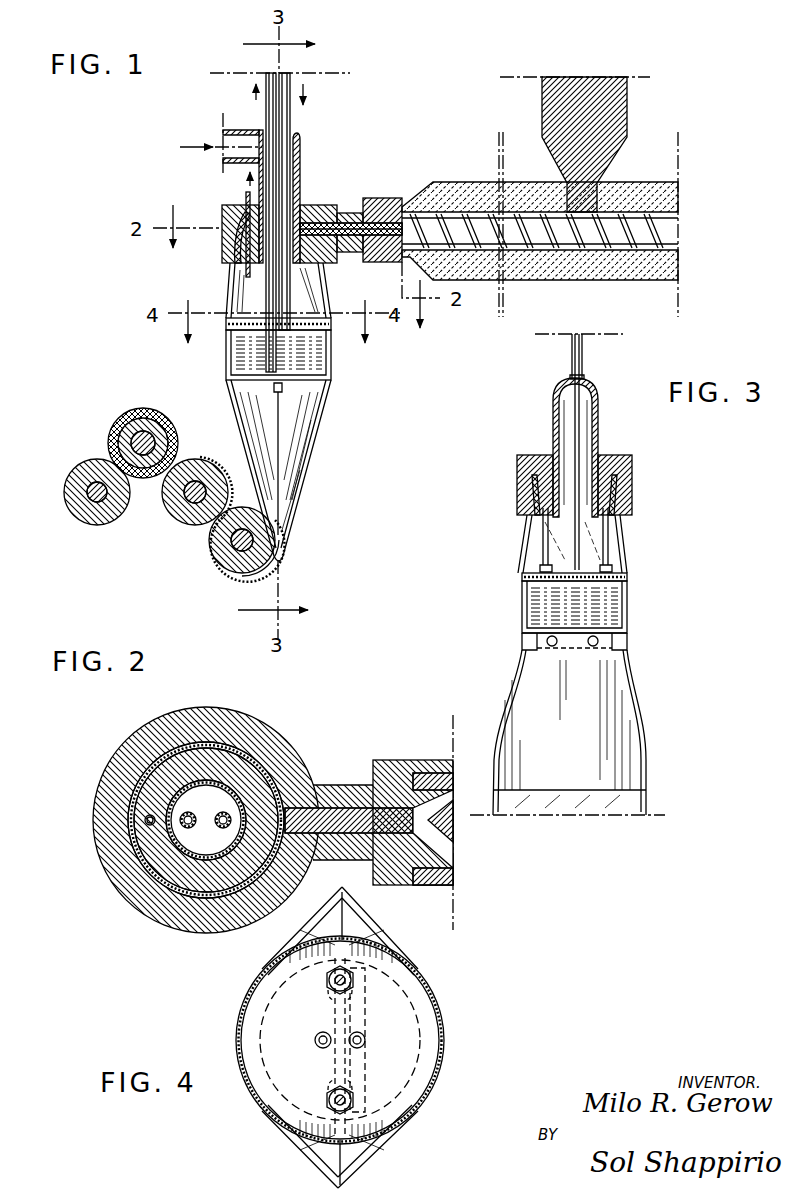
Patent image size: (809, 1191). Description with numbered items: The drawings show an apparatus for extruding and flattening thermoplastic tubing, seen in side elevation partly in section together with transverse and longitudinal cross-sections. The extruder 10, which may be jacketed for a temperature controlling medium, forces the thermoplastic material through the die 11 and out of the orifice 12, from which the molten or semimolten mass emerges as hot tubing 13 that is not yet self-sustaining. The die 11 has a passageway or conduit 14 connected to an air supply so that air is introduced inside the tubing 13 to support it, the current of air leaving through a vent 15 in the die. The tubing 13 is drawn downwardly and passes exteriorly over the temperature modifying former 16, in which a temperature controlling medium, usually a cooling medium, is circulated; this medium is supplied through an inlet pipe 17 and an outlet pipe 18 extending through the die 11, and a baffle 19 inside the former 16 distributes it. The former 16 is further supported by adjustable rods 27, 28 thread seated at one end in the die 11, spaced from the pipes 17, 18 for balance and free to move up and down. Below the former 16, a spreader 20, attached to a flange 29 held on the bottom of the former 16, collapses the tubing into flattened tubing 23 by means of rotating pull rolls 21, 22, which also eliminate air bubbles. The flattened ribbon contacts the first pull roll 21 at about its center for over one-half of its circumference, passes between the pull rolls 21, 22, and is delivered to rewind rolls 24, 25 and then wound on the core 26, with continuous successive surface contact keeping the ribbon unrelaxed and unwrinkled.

In FIG. 1, the extruder 10 is at (630, 186).
In FIG. 2, the extruder 10 is at (430, 778).
In FIG. 1, the die 11 is at (320, 212).
In FIG. 3, the die 11 is at (625, 472).
In FIG. 2, the die 11 is at (287, 752).
In FIG. 1, the orifice 12 is at (232, 257).
In FIG. 3, the orifice 12 is at (530, 507).
In FIG. 2, the orifice 12 is at (165, 896).
In FIG. 1, the tubing 13 is at (324, 300).
In FIG. 3, the tubing 13 is at (624, 560).
In FIG. 4, the tubing 13 is at (427, 992).
In FIG. 1, the passageway or conduit 14 is at (240, 188).
In FIG. 3, the passageway or conduit 14 is at (553, 410).
In FIG. 2, the passageway or conduit 14 is at (205, 862).
In FIG. 1, the vent 15 is at (245, 195).
In FIG. 2, the vent 15 is at (145, 818).
In FIG. 1, the temperature modifying former 16 is at (331, 360).
In FIG. 3, the temperature modifying former 16 is at (627, 604).
In FIG. 4, the temperature modifying former 16 is at (405, 1102).
In FIG. 1, the inlet pipe 17 is at (292, 118).
In FIG. 3, the inlet pipe 17 is at (572, 355).
In FIG. 2, the inlet pipe 17 is at (223, 830).
In FIG. 4, the inlet pipe 17 is at (366, 1042).
In FIG. 1, the outlet pipe 18 is at (266, 116).
In FIG. 2, the outlet pipe 18 is at (191, 812).
In FIG. 4, the outlet pipe 18 is at (314, 1042).
In FIG. 1, the baffle 19 is at (232, 340).
In FIG. 3, the baffle 19 is at (537, 590).
In FIG. 4, the baffle 19 is at (421, 1036).
In FIG. 1, the spreader 20 is at (279, 442).
In FIG. 3, the spreader 20 is at (632, 737).
In FIG. 4, the spreader 20 is at (334, 1016).
In FIG. 1, the pull roll 21 is at (232, 580).
In FIG. 1, the pull roll 22 is at (187, 513).
In FIG. 1, the flattened tubing 23 is at (210, 553).
In FIG. 1, the rewind roll 24 is at (82, 513).
In FIG. 1, the rewind roll 25 is at (135, 442).
In FIG. 1, the core 26 is at (157, 438).
In FIG. 3, the adjustable rod 27 is at (543, 549).
In FIG. 4, the adjustable rod 27 is at (353, 986).
In FIG. 3, the adjustable rod 28 is at (612, 543).
In FIG. 4, the adjustable rod 28 is at (329, 1095).
In FIG. 1, the flange 29 is at (286, 392).
In FIG. 3, the flange 29 is at (572, 647).
In FIG. 4, the flange 29 is at (365, 1061).